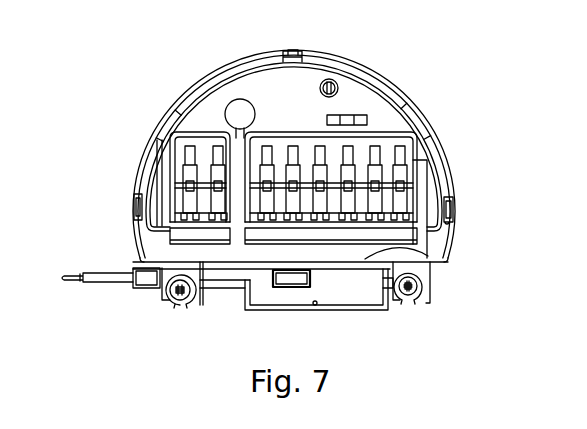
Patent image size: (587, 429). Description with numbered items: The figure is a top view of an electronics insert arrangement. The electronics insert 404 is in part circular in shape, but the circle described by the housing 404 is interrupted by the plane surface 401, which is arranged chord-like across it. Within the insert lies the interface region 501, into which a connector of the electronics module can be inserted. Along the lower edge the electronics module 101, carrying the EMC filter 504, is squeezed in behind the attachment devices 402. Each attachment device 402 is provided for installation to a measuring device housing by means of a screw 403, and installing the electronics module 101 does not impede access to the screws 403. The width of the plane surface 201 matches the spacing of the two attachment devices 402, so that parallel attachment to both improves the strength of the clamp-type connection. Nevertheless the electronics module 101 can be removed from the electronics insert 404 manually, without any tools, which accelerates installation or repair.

The electronics insert 404 is at (356, 62).
The interface region 501 is at (385, 118).
The plane surface 401 is at (437, 250).
The plane surface 201 is at (430, 262).
The screw 403 is at (427, 292).
The attachment device 402 is at (167, 313).
The electronics module 101 is at (348, 290).
The EMC filter 504 is at (317, 305).